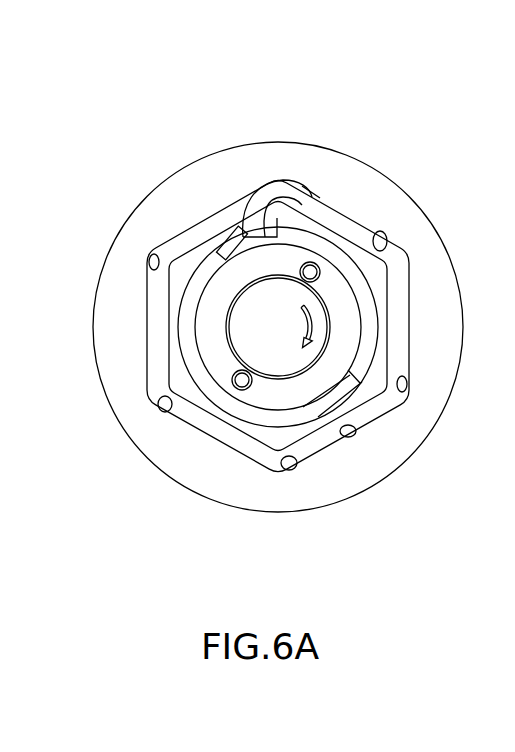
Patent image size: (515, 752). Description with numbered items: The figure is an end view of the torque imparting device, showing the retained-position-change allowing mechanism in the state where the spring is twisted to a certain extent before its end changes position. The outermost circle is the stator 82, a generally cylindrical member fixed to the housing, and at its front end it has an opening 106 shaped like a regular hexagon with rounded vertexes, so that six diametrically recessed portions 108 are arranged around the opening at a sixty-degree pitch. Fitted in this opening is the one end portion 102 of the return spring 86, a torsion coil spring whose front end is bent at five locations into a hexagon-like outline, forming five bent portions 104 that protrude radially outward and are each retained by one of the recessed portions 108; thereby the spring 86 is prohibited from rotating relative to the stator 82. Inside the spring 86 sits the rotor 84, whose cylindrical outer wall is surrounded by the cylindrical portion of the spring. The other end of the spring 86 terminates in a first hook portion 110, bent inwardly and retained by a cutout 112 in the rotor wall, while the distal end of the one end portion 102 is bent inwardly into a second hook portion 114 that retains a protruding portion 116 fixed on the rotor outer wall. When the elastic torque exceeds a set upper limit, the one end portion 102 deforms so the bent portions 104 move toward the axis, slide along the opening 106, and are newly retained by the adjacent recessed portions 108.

The stator 82 is at (366, 504).
The rotor 84 is at (160, 330).
The return spring 86 is at (175, 216).
The one end portion 102 is at (405, 300).
The bent portions 104 is at (280, 192).
The opening 106 is at (356, 486).
The recessed portions 108 is at (250, 195).
The first hook portion 110 is at (258, 196).
The cutout 112 is at (228, 236).
The second hook portion 114 is at (318, 196).
The protruding portion 116 is at (388, 356).